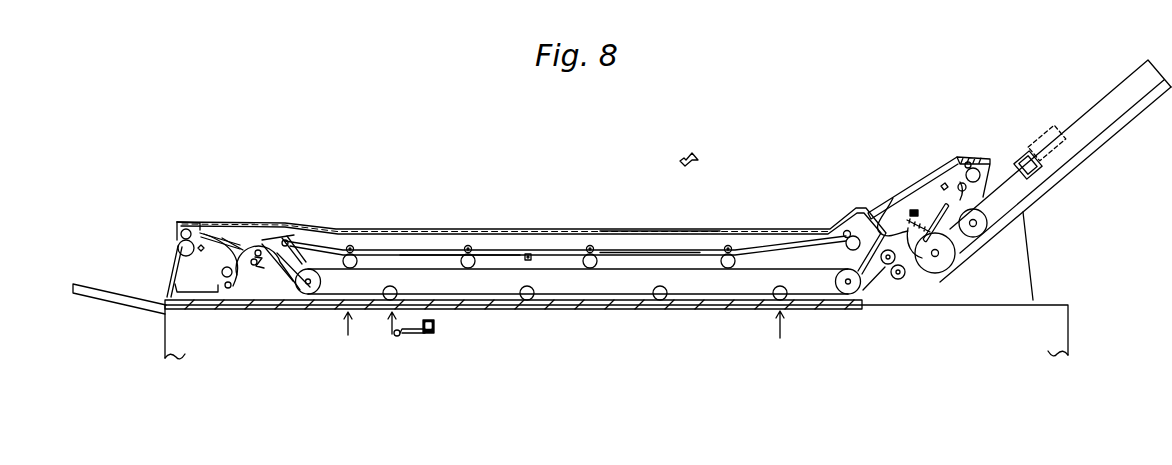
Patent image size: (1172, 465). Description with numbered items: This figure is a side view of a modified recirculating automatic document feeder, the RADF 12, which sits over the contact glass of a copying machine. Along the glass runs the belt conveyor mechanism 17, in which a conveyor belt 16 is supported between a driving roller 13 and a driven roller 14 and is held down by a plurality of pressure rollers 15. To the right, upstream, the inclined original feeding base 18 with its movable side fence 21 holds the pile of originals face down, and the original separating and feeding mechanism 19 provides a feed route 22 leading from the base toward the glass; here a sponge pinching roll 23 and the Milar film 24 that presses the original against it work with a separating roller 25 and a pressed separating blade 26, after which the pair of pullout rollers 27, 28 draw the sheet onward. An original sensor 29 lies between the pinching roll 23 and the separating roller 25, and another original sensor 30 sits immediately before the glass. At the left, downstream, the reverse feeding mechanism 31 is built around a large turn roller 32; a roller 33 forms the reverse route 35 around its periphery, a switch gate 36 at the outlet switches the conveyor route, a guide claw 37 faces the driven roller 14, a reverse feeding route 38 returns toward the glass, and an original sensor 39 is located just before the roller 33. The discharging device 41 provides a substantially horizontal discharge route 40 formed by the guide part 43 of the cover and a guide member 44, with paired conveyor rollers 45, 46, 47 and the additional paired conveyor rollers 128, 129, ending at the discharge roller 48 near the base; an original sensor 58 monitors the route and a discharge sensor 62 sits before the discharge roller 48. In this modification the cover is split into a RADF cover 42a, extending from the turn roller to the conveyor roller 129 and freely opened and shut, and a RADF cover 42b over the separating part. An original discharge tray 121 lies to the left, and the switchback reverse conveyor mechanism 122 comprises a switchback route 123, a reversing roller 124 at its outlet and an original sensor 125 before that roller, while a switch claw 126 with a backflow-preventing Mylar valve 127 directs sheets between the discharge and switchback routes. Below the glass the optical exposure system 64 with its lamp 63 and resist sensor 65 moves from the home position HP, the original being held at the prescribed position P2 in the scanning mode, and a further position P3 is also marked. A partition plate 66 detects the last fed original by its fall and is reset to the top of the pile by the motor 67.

The RADF 12 is at (691, 149).
The driving roller 13 is at (840, 292).
The driven roller 14 is at (313, 297).
The pressure rollers 15 is at (387, 300).
The conveyor belt 16 is at (626, 271).
The belt conveyor mechanism 17 is at (585, 302).
The original feeding base 18 is at (1117, 117).
The original separating and feeding mechanism 19 is at (937, 274).
The movable side fence 21 is at (1088, 105).
The feed route 22 is at (908, 258).
The pinching roll 23 is at (998, 233).
The Milar film 24 is at (966, 155).
The separating roller 25 is at (950, 268).
The separating blade 26 is at (895, 206).
The pullout roller 27 is at (884, 264).
The pullout roller 28 is at (898, 280).
The original sensor 29 is at (956, 256).
The original sensor 30 is at (882, 284).
The reverse feeding mechanism 31 is at (273, 293).
The turn roller 32 is at (255, 289).
The roller 33 is at (221, 273).
The reverse route 35 is at (250, 293).
The switch gate 36 is at (264, 241).
The guide claw 37 is at (282, 298).
The reverse feeding route 38 is at (290, 238).
The original sensor 39 is at (226, 288).
The discharge route 40 is at (626, 252).
The discharging device 41 is at (654, 230).
The RADF cover 42a is at (408, 229).
The RADF cover 42b is at (912, 178).
The guide part 43 is at (432, 250).
The guide member 44 is at (555, 250).
The pair conveyor rollers 45 is at (350, 245).
The pair conveyor rollers 46 is at (468, 254).
The pair conveyor rollers 47 is at (590, 254).
The discharge roller 48 is at (977, 168).
The original sensor 58 is at (527, 253).
The discharge sensor 62 is at (943, 184).
The lamp 63 is at (399, 337).
The optical exposure system 64 is at (420, 333).
The resist sensor 65 is at (436, 327).
The partition plate 66 is at (1012, 152).
The motor 67 is at (1040, 130).
The original discharge tray 121 is at (115, 300).
The switchback reverse conveyor mechanism 122 is at (178, 220).
The switchback route 123 is at (190, 228).
The reversing roller 124 is at (177, 243).
The original sensor 125 is at (177, 257).
The switch claw 126 is at (223, 238).
The Mylar valve 127 is at (204, 231).
The paired conveyor rollers 128 is at (728, 253).
The paired conveyor rollers 129 is at (846, 234).
The home position HP is at (780, 335).
The prescribed position P2 is at (347, 336).
The position P3 is at (390, 339).